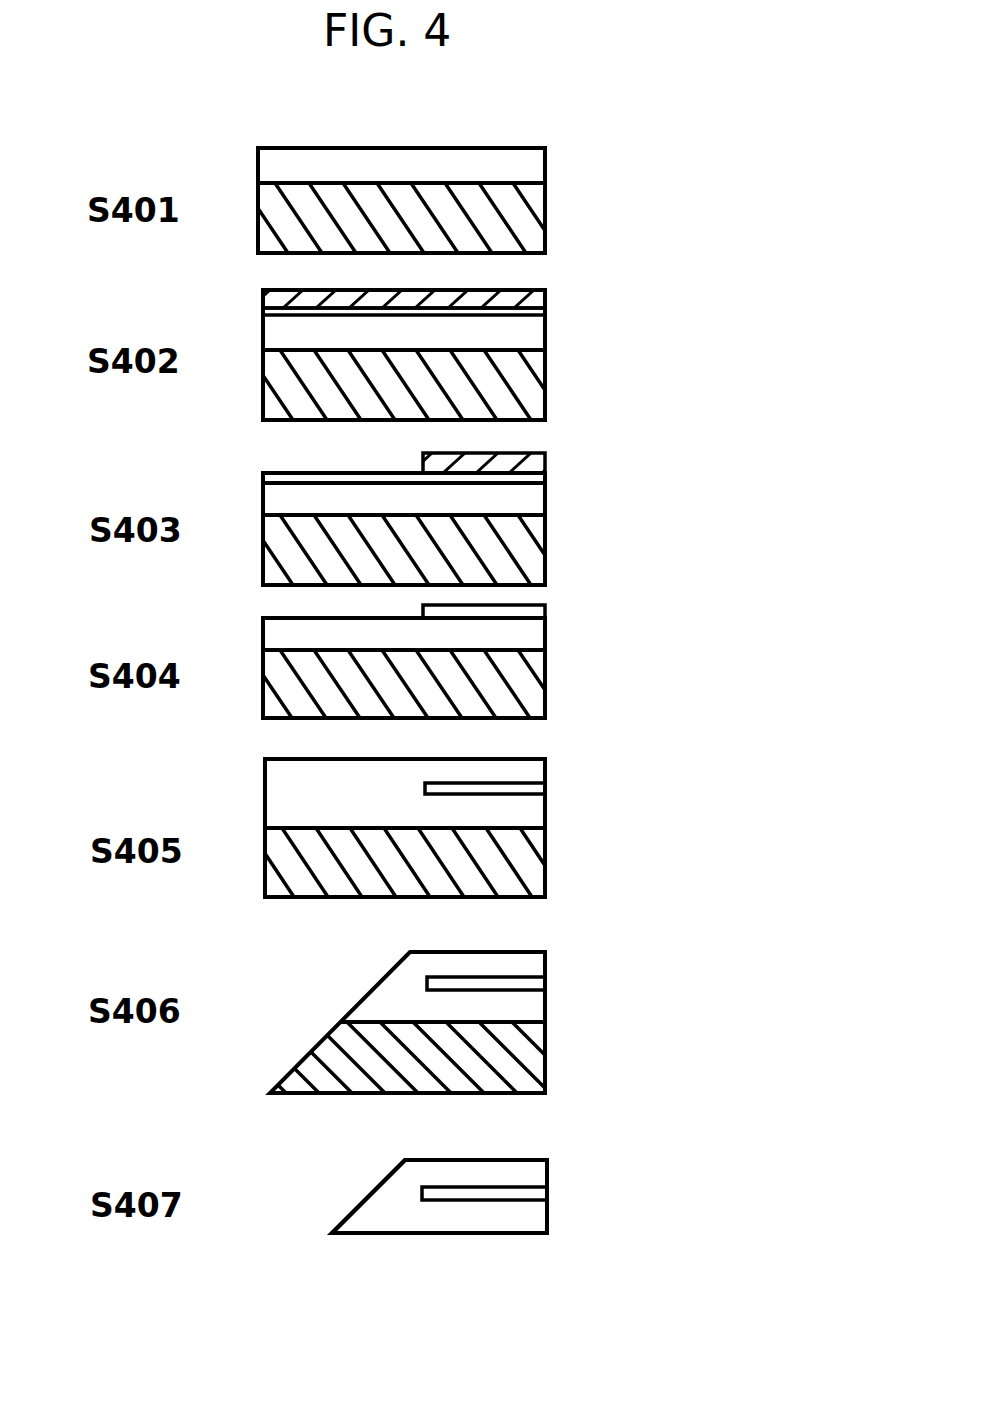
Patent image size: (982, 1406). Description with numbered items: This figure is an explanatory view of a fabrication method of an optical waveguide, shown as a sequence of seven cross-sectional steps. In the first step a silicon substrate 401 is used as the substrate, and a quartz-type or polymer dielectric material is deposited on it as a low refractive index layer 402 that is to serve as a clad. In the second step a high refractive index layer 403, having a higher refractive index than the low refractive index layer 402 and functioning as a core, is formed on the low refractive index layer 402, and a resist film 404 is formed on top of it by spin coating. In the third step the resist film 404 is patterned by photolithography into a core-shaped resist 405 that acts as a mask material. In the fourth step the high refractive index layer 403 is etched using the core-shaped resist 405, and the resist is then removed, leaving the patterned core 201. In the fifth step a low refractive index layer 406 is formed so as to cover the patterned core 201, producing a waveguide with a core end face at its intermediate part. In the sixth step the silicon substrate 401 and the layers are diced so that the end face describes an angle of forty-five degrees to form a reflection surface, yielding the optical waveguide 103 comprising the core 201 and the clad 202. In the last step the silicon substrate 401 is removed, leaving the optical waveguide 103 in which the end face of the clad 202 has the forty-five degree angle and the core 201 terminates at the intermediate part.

The silicon substrate 401 is at (545, 220).
The low refractive index layer 402 is at (545, 162).
The high refractive index layer 403 is at (545, 310).
The resist film 404 is at (545, 290).
The core-shaped resist 405 is at (547, 455).
The core 201 is at (547, 607).
The low refractive index layer 406 is at (510, 770).
The clad 202 is at (527, 967).
The optical waveguide 103 is at (503, 1242).